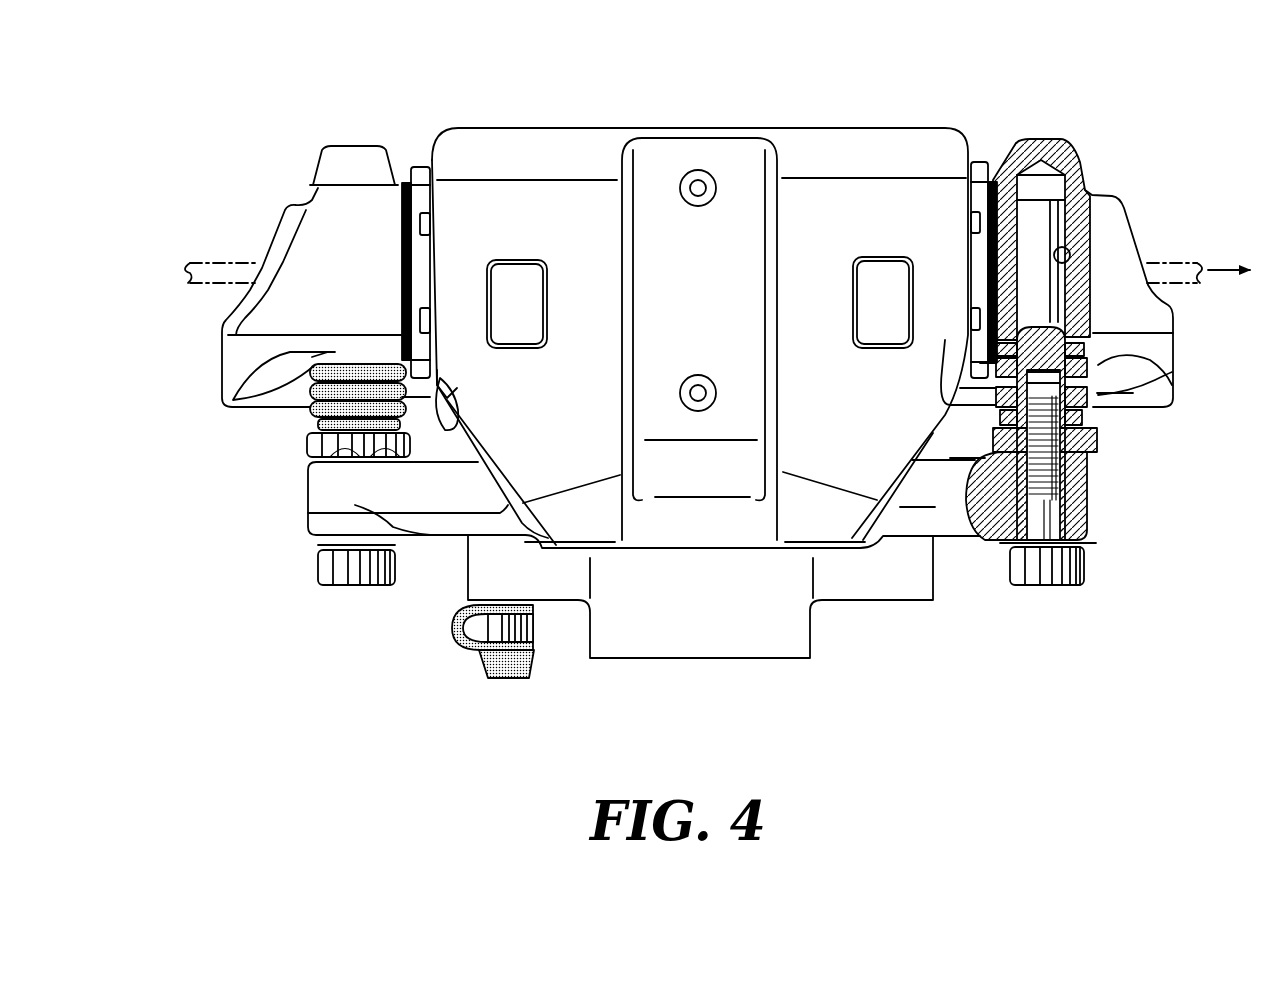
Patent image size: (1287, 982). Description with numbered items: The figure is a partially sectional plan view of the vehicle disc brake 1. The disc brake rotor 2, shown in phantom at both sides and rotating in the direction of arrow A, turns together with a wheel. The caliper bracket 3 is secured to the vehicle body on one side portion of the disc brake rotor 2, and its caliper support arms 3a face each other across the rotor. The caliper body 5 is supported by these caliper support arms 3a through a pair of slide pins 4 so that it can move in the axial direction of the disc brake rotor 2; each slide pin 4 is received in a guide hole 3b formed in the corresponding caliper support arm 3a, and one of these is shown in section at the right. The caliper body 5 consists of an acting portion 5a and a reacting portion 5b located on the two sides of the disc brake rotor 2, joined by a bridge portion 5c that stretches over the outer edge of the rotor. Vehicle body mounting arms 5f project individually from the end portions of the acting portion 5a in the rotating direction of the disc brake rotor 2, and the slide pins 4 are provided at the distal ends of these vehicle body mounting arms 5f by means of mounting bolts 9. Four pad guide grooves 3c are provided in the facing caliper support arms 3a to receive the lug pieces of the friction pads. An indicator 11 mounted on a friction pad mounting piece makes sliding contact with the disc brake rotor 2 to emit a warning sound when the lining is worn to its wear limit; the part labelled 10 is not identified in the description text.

The vehicle disc brake 1 is at (691, 63).
The disc brake rotor 2 is at (205, 268).
The caliper bracket 3 is at (1133, 220).
The caliper support arm 3a is at (290, 243).
The guide hole 3b is at (1067, 259).
The pad guide groove 3c is at (413, 257).
The slide pin 4 is at (1060, 307).
The caliper body 5 is at (710, 672).
The acting portion 5a is at (848, 592).
The reacting portion 5b is at (808, 140).
The bridge portion 5c is at (452, 287).
The vehicle body mounting arm 5f is at (438, 522).
The mounting bolt 9 is at (356, 571).
The pad retainer 10 is at (417, 165).
The indicator 11 is at (452, 432).